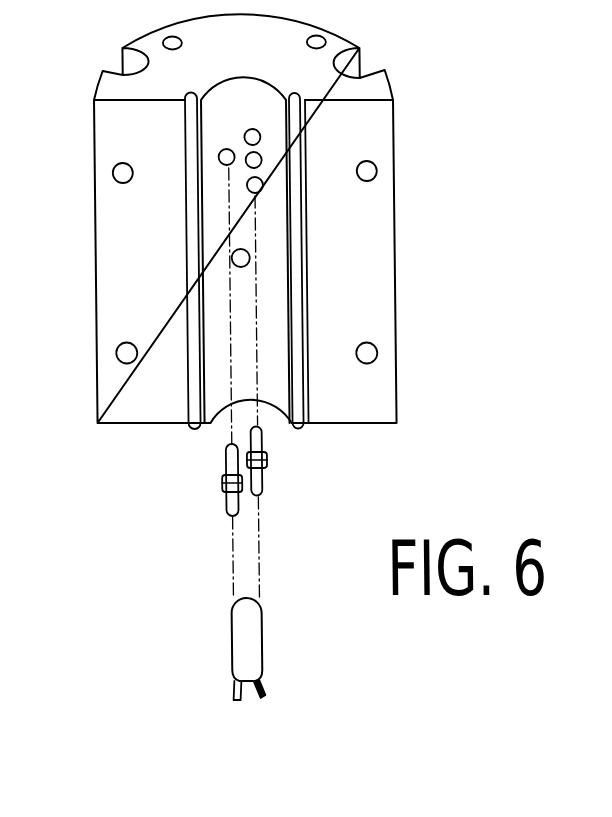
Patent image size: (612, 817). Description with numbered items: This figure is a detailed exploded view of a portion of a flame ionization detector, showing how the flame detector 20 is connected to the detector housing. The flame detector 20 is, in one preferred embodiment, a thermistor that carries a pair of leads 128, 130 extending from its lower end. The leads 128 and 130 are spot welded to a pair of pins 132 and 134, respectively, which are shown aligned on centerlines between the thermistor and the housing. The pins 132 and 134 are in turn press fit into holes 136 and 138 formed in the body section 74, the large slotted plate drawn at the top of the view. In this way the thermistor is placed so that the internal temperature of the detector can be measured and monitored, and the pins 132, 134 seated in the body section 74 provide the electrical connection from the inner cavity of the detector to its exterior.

The body section 74 is at (407, 159).
The hole 136 is at (221, 152).
The hole 138 is at (259, 155).
The pin 132 is at (218, 477).
The pin 134 is at (262, 456).
The flame detector 20 is at (234, 614).
The lead 128 is at (228, 688).
The lead 130 is at (256, 690).